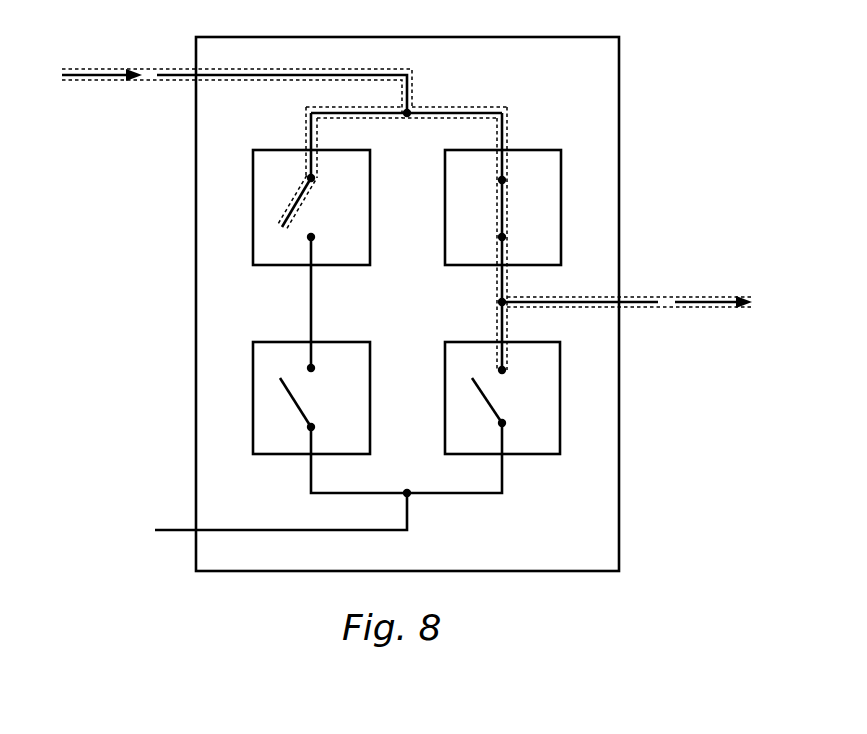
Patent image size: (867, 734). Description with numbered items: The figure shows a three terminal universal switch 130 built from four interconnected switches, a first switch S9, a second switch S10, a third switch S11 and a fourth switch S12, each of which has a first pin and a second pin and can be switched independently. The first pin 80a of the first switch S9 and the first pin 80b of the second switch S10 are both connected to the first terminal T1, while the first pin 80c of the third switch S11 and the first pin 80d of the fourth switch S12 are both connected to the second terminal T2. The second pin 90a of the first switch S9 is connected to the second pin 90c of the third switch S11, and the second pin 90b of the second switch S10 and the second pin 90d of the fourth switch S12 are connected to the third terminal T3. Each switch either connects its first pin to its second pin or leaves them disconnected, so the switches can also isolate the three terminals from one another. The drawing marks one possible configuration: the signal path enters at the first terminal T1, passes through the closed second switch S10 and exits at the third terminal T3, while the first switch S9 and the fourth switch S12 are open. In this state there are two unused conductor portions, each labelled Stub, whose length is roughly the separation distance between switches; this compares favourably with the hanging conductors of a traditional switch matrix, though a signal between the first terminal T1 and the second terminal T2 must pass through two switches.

The three terminal universal switch 130 is at (654, 47).
The first pin of the first switch 80a is at (317, 138).
The first pin of the second switch 80b is at (503, 123).
The first pin of the third switch 80c is at (310, 474).
The first pin of the fourth switch 80d is at (503, 473).
The second pin of the first switch 90a is at (308, 284).
The second pin of the second switch 90b is at (508, 285).
The second pin of the third switch 90c is at (308, 318).
The second pin of the fourth switch 90d is at (508, 323).
The first switch S9 is at (311, 207).
The second switch S10 is at (503, 207).
The third switch S11 is at (311, 398).
The fourth switch S12 is at (502, 398).
The first terminal T1 is at (237, 81).
The second terminal T2 is at (282, 524).
The third terminal T3 is at (625, 316).
The signal stub Stub is at (306, 126).